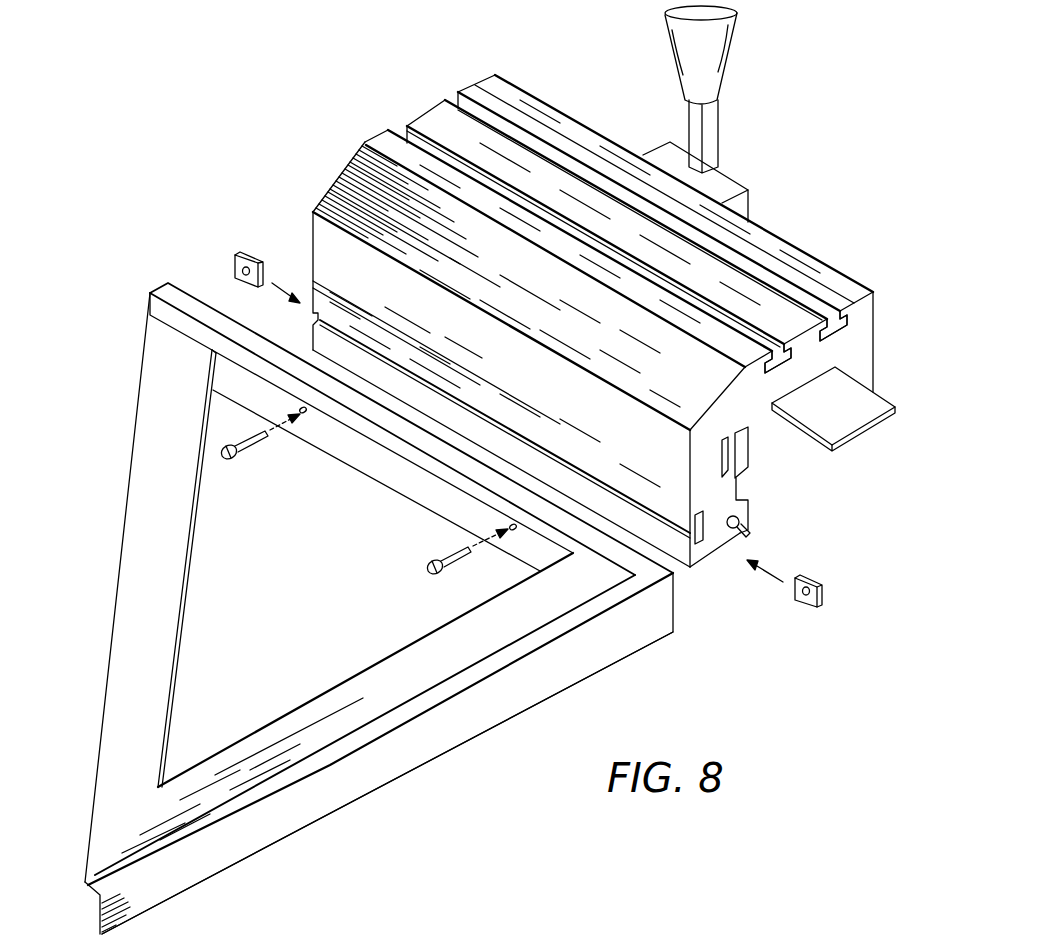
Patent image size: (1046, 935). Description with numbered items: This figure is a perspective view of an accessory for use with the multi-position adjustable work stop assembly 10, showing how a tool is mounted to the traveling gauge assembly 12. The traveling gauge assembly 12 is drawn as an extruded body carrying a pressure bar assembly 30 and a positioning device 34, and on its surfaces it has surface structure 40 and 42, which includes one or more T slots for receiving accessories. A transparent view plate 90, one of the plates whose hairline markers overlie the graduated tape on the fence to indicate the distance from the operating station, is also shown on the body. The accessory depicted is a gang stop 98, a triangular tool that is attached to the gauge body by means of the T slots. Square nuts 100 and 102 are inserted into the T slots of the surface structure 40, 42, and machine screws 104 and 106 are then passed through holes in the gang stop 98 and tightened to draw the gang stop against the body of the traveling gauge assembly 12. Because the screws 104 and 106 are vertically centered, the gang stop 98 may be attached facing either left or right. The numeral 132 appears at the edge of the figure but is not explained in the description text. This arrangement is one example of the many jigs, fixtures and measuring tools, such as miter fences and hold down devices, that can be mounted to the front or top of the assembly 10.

The multi-position adjustable work stop assembly 10 is at (128, 347).
The traveling gauge assembly 12 is at (551, 74).
The pressure bar assembly 30 is at (745, 448).
The positioning device 34 is at (750, 203).
The surface structure 40 is at (828, 309).
The surface structure 42 is at (706, 535).
The transparent view plate 90 is at (856, 412).
The gang stop 98 is at (372, 672).
The square nut 100 is at (250, 252).
The square nut 102 is at (798, 605).
The machine screw 104 is at (254, 450).
The machine screw 106 is at (440, 550).
The base bottom edge 132 is at (387, 783).